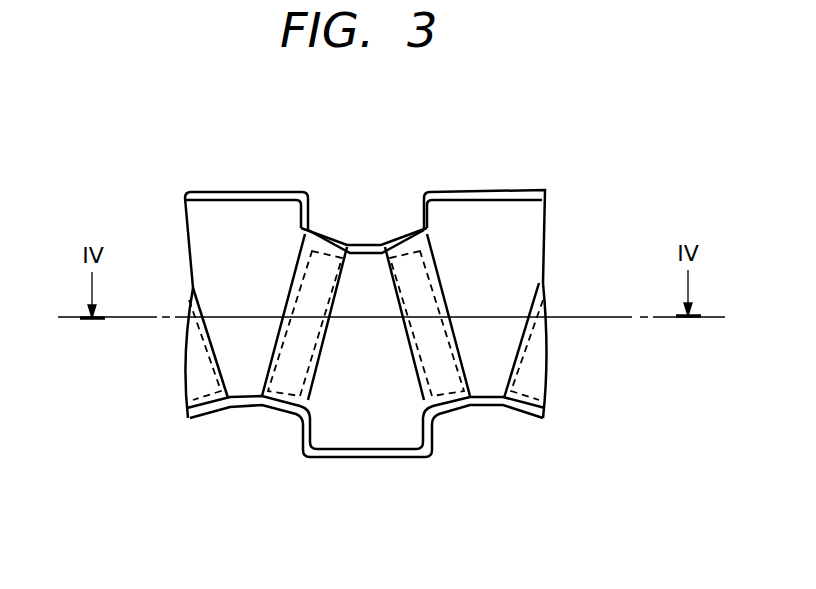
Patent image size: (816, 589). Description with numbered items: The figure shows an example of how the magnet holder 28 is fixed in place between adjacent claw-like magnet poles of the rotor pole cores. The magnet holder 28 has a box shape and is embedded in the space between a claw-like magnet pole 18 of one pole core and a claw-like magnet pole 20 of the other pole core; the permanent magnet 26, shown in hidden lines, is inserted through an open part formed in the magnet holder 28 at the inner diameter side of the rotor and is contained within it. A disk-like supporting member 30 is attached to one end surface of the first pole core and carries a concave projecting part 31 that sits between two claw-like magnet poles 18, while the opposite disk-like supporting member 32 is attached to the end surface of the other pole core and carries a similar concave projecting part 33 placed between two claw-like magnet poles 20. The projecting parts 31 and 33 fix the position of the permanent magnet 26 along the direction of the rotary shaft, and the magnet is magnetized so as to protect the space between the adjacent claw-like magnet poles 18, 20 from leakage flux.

The claw-like magnet pole 18 is at (215, 227).
The supporting member 30 is at (261, 194).
The projecting part 31 is at (365, 244).
The magnet holder 28 is at (437, 280).
The permanent magnet 26 is at (440, 360).
The projecting part 33 is at (243, 407).
The supporting member 32 is at (312, 453).
The claw-like magnet pole 20 is at (395, 423).